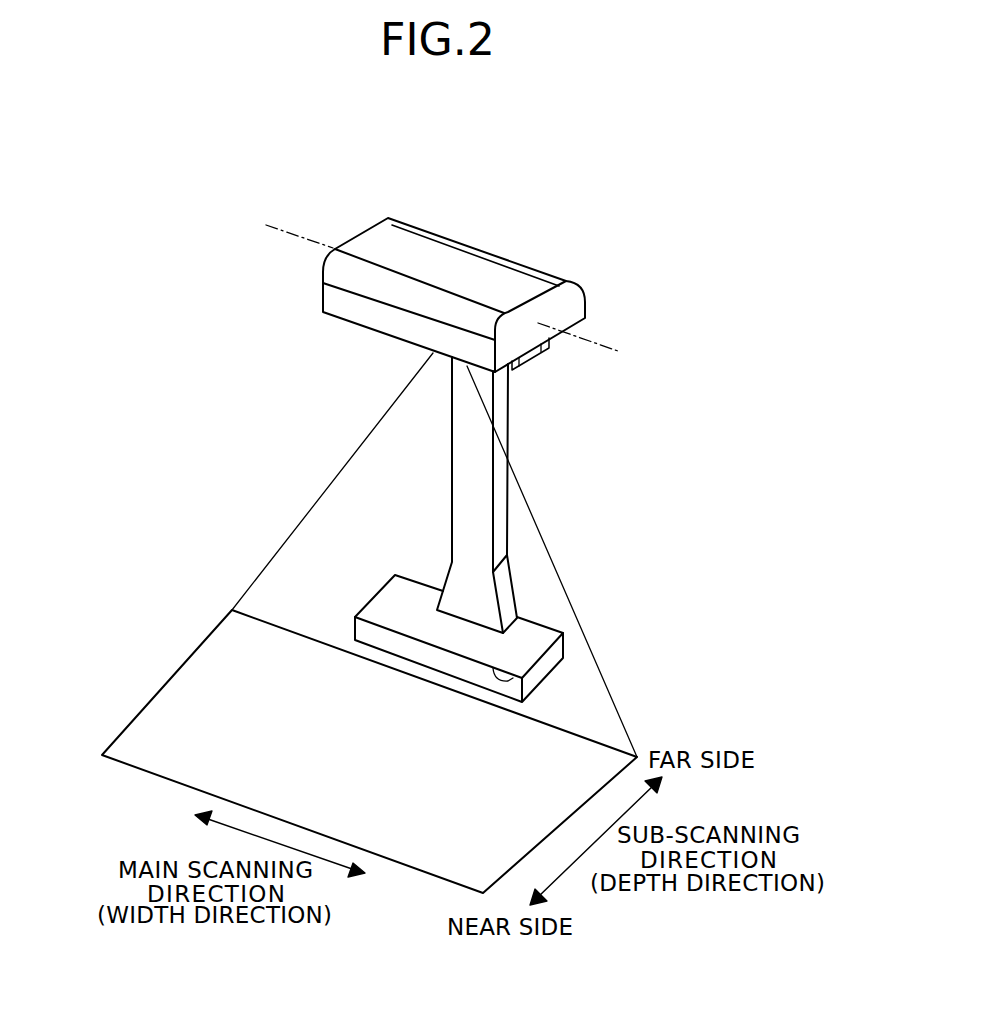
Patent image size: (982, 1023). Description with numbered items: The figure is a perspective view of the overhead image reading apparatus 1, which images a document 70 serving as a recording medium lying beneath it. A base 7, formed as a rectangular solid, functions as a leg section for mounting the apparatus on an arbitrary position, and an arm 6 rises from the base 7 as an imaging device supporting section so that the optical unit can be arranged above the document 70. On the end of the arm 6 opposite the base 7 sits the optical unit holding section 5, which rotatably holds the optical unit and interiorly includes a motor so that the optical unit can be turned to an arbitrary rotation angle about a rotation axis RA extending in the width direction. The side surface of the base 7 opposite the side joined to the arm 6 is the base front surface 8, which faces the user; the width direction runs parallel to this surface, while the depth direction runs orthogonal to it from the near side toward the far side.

The overhead image reading apparatus 1 is at (363, 195).
The optical unit holding section 5 is at (513, 260).
The rotation axis RA is at (597, 343).
The arm 6 is at (510, 407).
The base 7 is at (543, 623).
The base front surface 8 is at (523, 682).
The document 70 is at (172, 683).